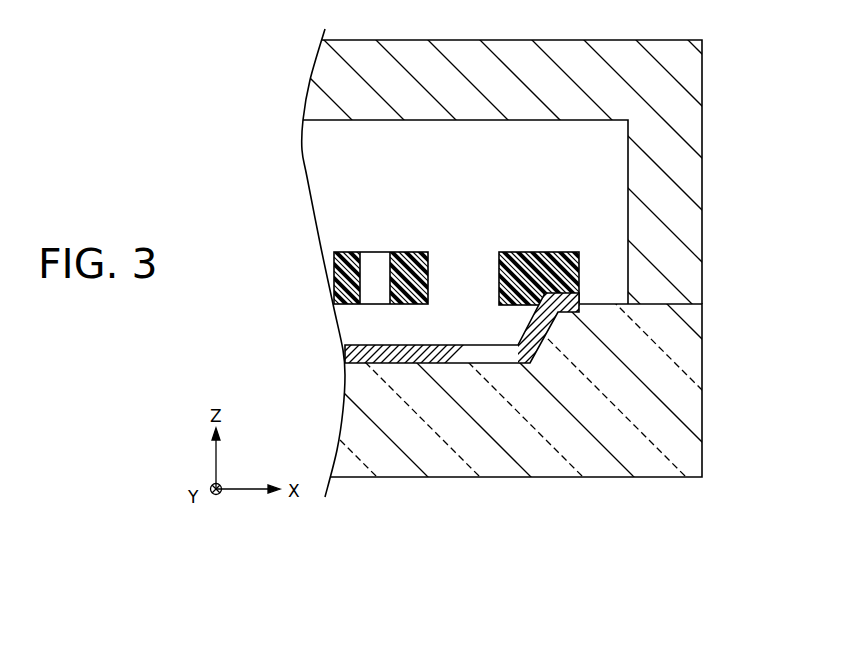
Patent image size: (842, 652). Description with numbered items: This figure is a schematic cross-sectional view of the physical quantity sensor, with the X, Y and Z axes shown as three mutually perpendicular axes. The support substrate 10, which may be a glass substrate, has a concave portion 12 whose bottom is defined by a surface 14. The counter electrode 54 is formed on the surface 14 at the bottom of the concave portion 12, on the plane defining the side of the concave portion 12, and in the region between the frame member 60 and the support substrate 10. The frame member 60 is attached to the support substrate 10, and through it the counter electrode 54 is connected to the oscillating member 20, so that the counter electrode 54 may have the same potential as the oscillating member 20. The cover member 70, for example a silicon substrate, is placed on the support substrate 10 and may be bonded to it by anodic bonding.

The cover member 70 is at (570, 58).
The concave portion 12 is at (461, 320).
The support substrate 10 is at (695, 358).
The oscillating member 20 is at (350, 252).
The frame member 60 is at (565, 252).
The counter electrode 54 is at (473, 345).
The surface 14 is at (372, 350).